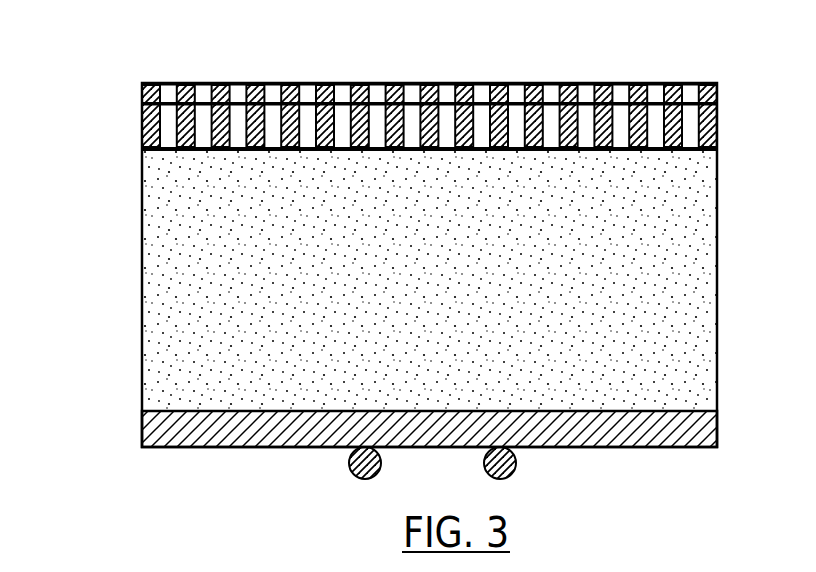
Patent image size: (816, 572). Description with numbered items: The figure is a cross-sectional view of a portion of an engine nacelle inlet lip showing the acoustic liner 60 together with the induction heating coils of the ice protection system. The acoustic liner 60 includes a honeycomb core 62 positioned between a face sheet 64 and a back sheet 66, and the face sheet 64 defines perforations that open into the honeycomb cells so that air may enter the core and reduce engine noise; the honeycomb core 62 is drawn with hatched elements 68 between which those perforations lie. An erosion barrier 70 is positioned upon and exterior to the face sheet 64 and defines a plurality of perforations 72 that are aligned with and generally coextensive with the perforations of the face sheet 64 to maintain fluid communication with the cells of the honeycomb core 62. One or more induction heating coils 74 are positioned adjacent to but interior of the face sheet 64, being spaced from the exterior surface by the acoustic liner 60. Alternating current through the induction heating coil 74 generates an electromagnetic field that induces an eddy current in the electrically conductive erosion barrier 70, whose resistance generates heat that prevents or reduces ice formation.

The acoustic liner 60 is at (117, 252).
The honeycomb core 62 is at (718, 270).
The face sheet 64 is at (466, 83).
The back sheet 66 is at (718, 430).
The active pillars 68 is at (444, 120).
The erosion barrier 70 is at (718, 90).
The perforations 72 is at (237, 93).
The induction heating coil 74 is at (382, 460).